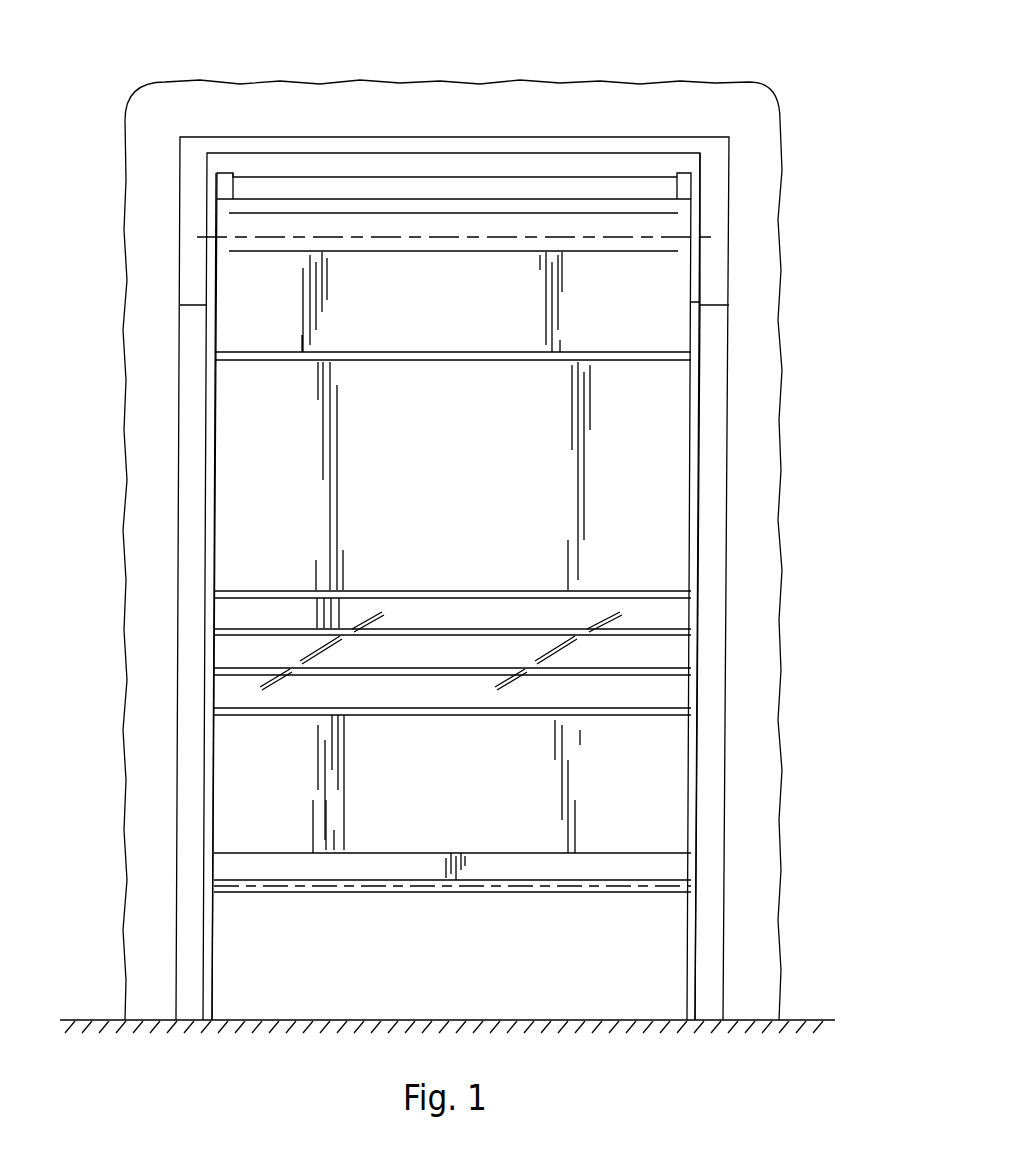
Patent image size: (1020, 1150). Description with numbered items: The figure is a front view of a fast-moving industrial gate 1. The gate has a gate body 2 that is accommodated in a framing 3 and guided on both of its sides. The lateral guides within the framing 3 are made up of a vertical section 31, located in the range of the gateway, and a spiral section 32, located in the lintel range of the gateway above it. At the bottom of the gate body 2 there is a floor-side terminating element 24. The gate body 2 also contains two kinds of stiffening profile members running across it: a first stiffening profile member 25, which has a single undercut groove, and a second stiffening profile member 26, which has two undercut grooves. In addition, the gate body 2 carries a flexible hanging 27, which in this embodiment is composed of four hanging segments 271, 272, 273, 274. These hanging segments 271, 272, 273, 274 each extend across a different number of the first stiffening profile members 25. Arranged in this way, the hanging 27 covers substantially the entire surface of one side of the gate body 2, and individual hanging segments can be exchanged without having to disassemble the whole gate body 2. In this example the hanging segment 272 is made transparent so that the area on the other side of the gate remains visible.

The fast-moving industrial gate 1 is at (638, 127).
The gate body 2 is at (692, 513).
The framing 3 is at (730, 389).
The vertical section 31 is at (695, 428).
The spiral section 32 is at (697, 268).
The floor-side terminating element 24 is at (670, 870).
The first stiffening profile member 25 is at (665, 636).
The second stiffening profile member 26 is at (665, 352).
The flexible hanging 27 is at (213, 551).
The hanging segment 271 is at (230, 790).
The hanging segment 272 is at (230, 655).
The hanging segment 273 is at (228, 492).
The hanging segment 274 is at (230, 273).